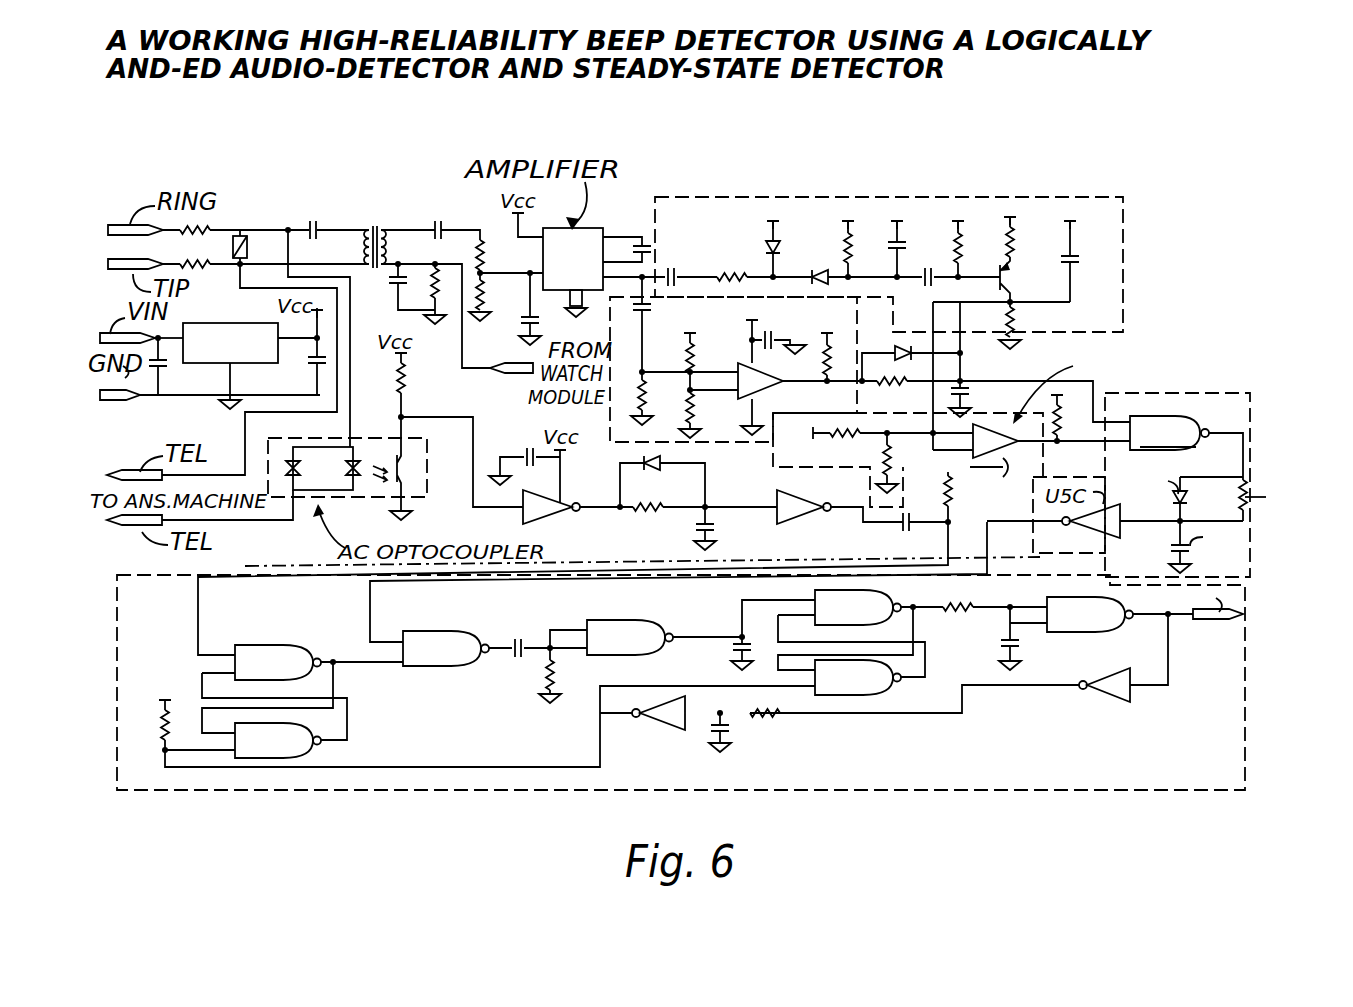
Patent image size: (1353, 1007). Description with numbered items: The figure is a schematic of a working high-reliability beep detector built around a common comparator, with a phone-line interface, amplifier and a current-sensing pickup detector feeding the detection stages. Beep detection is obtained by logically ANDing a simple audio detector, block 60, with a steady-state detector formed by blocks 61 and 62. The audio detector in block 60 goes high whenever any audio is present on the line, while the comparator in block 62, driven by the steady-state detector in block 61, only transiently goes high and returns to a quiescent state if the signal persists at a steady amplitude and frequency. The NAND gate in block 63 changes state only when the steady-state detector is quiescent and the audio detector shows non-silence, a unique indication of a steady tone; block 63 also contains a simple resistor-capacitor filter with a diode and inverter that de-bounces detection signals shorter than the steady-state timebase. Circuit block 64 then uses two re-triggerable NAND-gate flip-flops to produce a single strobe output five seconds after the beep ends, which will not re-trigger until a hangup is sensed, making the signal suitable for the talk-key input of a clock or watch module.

The audio detector block 60 is at (720, 328).
The steady-state detector block 61 is at (732, 227).
The comparator block 62 is at (990, 430).
The NAND gate and R/C filter block 63 is at (1240, 418).
The logic circuit block 64 is at (137, 660).